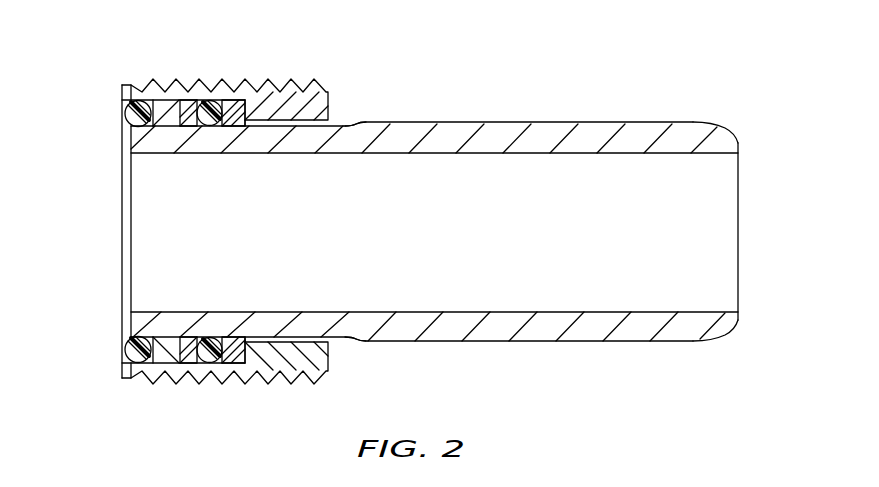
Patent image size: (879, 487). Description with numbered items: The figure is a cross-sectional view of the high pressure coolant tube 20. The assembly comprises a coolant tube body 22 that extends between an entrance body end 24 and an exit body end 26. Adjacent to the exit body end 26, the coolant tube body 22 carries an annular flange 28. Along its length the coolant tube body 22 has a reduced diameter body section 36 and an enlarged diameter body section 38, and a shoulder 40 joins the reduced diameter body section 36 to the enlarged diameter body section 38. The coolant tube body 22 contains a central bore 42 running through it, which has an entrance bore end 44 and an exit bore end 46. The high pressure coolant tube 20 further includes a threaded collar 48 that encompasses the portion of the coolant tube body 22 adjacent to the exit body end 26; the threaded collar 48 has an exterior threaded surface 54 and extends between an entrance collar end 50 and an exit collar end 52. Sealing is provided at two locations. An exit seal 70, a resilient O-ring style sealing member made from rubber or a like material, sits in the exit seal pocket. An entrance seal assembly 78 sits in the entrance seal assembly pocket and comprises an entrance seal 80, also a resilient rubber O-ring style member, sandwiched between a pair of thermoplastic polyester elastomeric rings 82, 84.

The high pressure coolant tube 20 is at (673, 73).
The coolant tube body 22 is at (578, 140).
The entrance body end 24 is at (737, 143).
The exit body end 26 is at (120, 135).
The annular flange 28 is at (165, 347).
The reduced diameter body section 36 is at (348, 124).
The enlarged diameter body section 38 is at (465, 122).
The shoulder 40 is at (360, 123).
The central bore 42 is at (688, 240).
The entrance bore end 44 is at (740, 277).
The exit bore end 46 is at (120, 238).
The threaded collar 48 is at (328, 362).
The entrance collar end 50 is at (325, 377).
The exit collar end 52 is at (132, 313).
The exterior threaded surface 54 is at (238, 370).
The exit seal 70 is at (127, 355).
The entrance seal assembly 78 is at (172, 128).
The entrance seal 80 is at (210, 103).
The thermoplastic polyester elastomeric ring 82 is at (188, 102).
The thermoplastic polyester elastomeric ring 84 is at (247, 103).